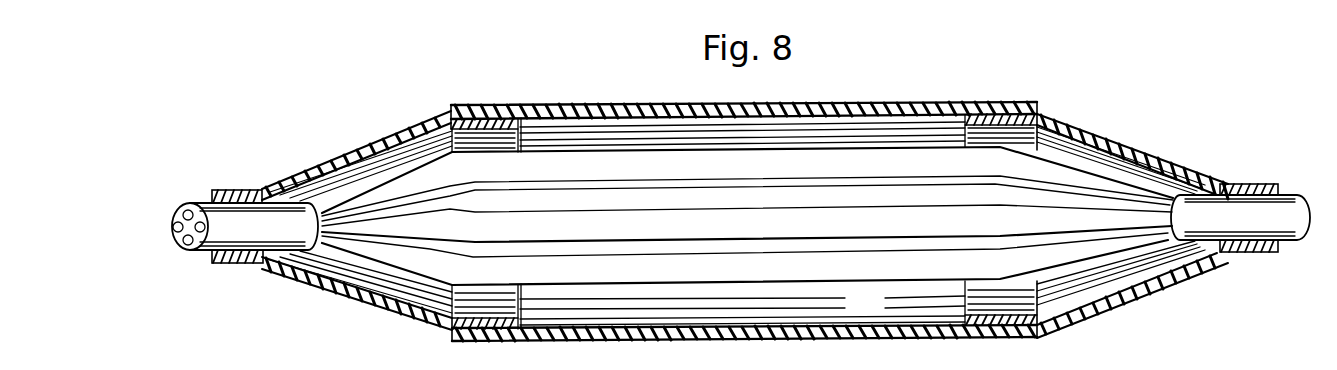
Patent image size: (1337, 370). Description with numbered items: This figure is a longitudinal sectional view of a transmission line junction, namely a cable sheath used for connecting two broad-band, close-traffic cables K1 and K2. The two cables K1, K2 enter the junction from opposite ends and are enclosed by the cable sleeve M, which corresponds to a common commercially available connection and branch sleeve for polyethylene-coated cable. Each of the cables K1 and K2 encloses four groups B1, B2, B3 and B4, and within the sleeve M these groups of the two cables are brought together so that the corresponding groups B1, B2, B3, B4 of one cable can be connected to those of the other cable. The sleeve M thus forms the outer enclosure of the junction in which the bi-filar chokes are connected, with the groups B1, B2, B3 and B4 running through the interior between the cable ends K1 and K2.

The cable sleeve M is at (745, 335).
The first broad-band close-traffic cable K1 is at (203, 252).
The second broad-band close-traffic cable K2 is at (1287, 228).
The first group B1 is at (817, 163).
The second group B2 is at (857, 200).
The third group B3 is at (913, 225).
The fourth group B4 is at (897, 268).